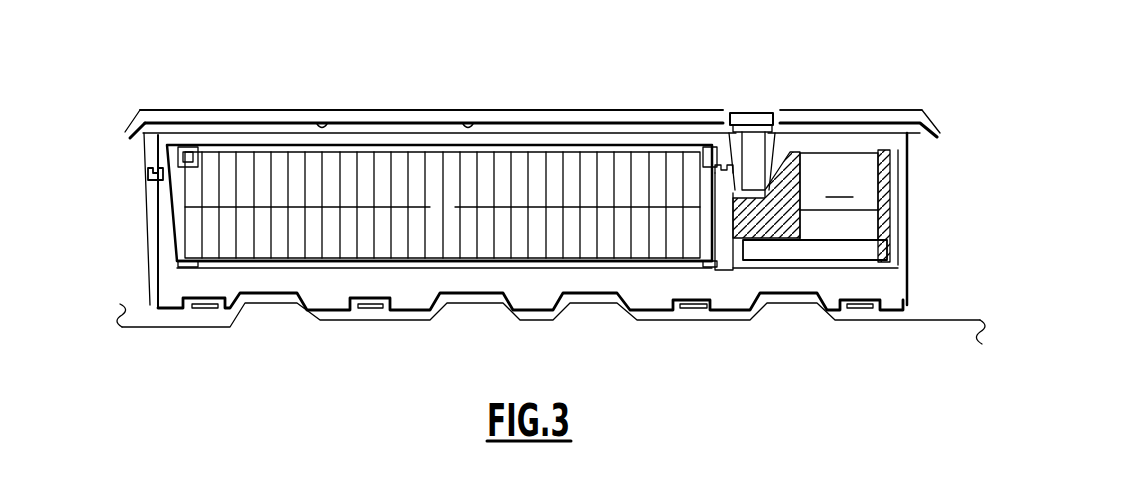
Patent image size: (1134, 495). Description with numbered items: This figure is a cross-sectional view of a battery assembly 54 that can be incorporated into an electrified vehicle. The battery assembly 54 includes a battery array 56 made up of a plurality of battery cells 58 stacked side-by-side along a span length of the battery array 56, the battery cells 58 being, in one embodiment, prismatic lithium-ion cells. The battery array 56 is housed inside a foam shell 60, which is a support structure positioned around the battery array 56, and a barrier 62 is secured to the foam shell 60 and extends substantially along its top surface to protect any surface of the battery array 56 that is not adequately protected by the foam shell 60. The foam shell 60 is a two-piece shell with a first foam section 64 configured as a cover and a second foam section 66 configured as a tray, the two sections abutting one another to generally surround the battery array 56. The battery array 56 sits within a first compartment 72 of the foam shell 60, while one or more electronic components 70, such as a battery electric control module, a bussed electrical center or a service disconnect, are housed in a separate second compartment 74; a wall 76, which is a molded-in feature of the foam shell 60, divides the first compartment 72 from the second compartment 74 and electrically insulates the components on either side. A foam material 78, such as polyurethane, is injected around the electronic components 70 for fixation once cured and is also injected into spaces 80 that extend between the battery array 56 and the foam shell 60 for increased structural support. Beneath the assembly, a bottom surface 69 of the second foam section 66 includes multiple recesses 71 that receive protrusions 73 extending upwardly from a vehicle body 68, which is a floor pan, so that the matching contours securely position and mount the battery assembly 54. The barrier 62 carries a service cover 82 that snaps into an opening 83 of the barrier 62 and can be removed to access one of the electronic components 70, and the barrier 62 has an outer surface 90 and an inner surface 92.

The battery assembly 54 is at (720, 80).
The battery array 56 is at (390, 178).
The battery cells 58 is at (277, 167).
The foam shell 60 is at (148, 222).
The barrier 62 is at (530, 117).
The first foam section 64 is at (150, 162).
The second foam section 66 is at (168, 277).
The vehicle body 68 is at (417, 321).
The bottom surface 69 is at (338, 305).
The electronic components 70 is at (813, 250).
The recesses 71 is at (440, 288).
The first compartment 72 is at (248, 270).
The protrusions 73 is at (289, 331).
The second compartment 74 is at (776, 178).
The wall 76 is at (722, 233).
The foam material 78 is at (185, 148).
The spaces 80 is at (213, 150).
The service cover 82 is at (738, 110).
The opening 83 is at (777, 113).
The outer surface 90 is at (440, 110).
The inner surface 92 is at (323, 125).